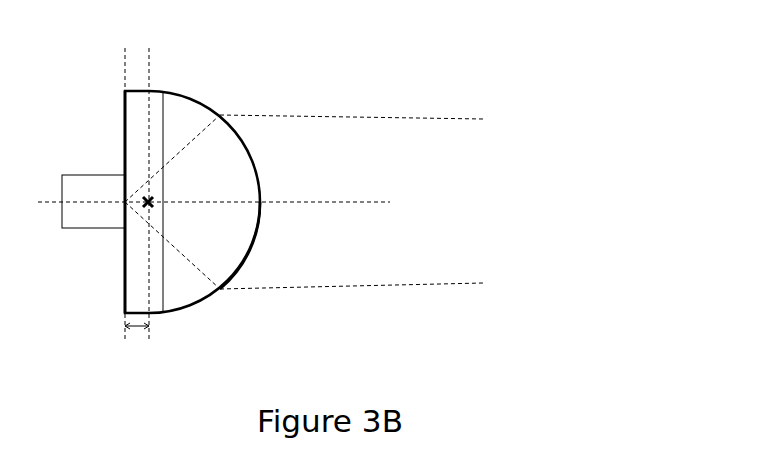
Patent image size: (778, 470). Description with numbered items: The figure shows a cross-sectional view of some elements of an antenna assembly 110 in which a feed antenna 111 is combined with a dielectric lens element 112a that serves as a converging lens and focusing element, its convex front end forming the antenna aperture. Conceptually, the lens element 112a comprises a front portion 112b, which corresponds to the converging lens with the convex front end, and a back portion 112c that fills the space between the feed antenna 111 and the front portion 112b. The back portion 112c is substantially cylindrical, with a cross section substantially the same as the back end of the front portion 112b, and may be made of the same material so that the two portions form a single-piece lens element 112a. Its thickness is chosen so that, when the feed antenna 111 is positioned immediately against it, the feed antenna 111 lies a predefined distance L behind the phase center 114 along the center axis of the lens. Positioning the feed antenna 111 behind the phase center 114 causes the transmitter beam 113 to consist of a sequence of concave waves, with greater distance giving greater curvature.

The antenna assembly 110 is at (222, 17).
The feed antenna 111 is at (93, 201).
The lens element 112a is at (258, 238).
The front portion 112b is at (197, 108).
The back portion 112c is at (135, 108).
The transmitter beam 113 is at (380, 117).
The phase center 114 is at (160, 196).